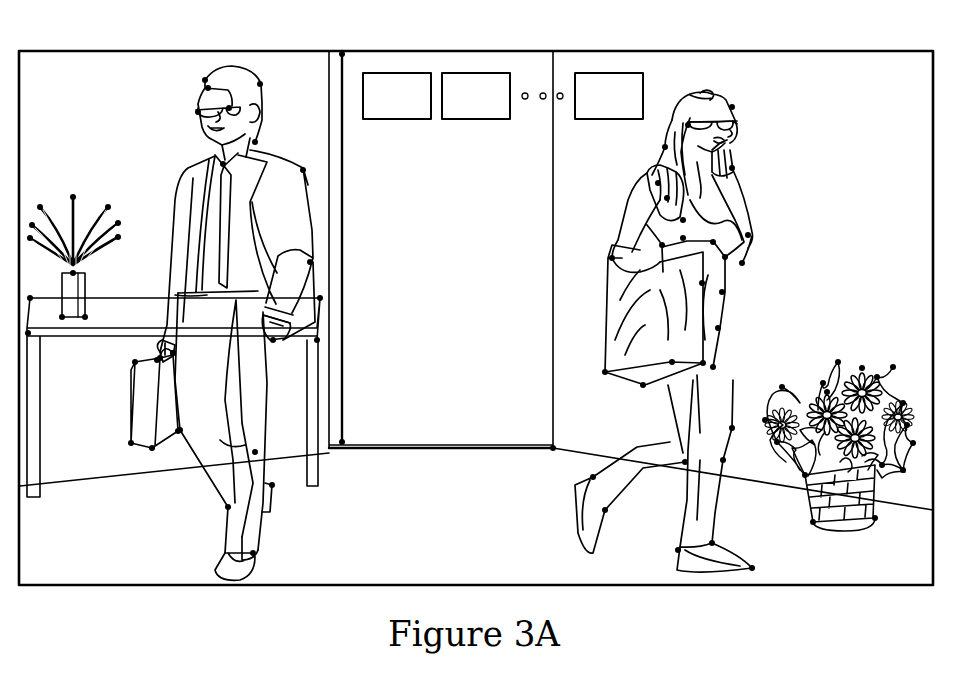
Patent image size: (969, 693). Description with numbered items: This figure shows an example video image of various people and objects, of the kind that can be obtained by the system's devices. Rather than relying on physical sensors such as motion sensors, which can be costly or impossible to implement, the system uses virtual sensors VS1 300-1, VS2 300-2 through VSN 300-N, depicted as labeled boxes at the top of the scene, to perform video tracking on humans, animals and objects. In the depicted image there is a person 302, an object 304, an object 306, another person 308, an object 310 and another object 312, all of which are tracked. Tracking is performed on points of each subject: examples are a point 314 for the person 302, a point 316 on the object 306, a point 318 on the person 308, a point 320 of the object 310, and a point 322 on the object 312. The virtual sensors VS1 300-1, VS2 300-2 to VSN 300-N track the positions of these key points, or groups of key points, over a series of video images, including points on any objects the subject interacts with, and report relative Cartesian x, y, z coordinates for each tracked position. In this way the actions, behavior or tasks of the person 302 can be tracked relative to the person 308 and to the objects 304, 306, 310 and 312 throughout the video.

The virtual sensor VS1 300-1 is at (398, 120).
The virtual sensor VS2 300-2 is at (478, 120).
The virtual sensor VSN 300-N is at (612, 120).
The person 302 is at (197, 163).
The object 304 is at (131, 421).
The object 306 is at (86, 292).
The person 308 is at (738, 214).
The object 310 is at (603, 310).
The object 312 is at (813, 506).
The point 314 is at (333, 262).
The point 316 is at (73, 196).
The point 318 is at (733, 107).
The point 320 is at (605, 375).
The point 322 is at (838, 360).